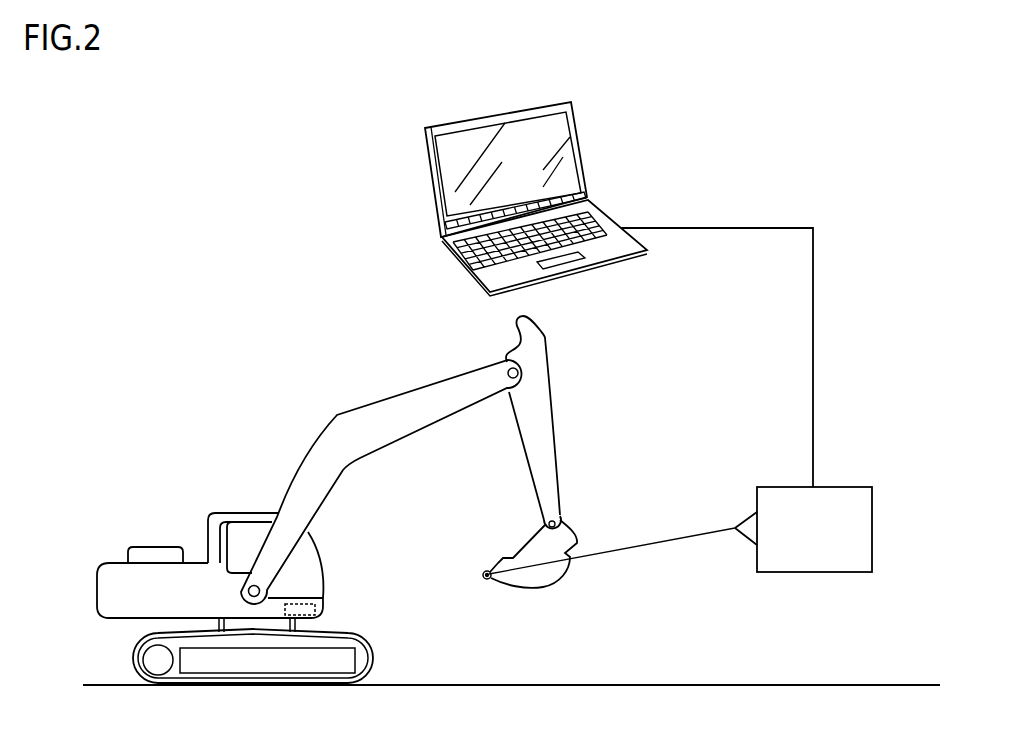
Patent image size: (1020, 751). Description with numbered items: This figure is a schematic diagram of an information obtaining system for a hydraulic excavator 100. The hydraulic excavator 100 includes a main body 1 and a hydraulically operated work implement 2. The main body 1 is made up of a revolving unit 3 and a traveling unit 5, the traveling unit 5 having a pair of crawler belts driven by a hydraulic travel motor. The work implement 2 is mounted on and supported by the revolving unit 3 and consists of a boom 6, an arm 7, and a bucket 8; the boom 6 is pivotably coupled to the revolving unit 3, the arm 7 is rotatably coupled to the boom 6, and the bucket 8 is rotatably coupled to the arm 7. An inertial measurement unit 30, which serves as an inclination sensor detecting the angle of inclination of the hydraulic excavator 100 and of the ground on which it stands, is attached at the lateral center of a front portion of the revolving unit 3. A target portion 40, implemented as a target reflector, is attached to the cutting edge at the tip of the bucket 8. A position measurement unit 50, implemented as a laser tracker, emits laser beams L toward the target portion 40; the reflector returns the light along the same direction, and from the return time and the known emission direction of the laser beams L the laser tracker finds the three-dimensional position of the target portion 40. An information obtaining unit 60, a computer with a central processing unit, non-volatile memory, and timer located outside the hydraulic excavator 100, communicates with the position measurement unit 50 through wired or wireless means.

The hydraulic excavator 100 is at (94, 500).
The main body 1 is at (62, 577).
The work implement 2 is at (417, 350).
The revolving unit 3 is at (108, 590).
The traveling unit 5 is at (130, 660).
The boom 6 is at (368, 420).
The arm 7 is at (542, 405).
The bucket 8 is at (549, 576).
The inertial measurement unit 30 is at (316, 610).
The target portion 40 is at (487, 580).
The position measurement unit 50 is at (850, 487).
The information obtaining unit 60 is at (495, 115).
The laser beams L is at (660, 543).